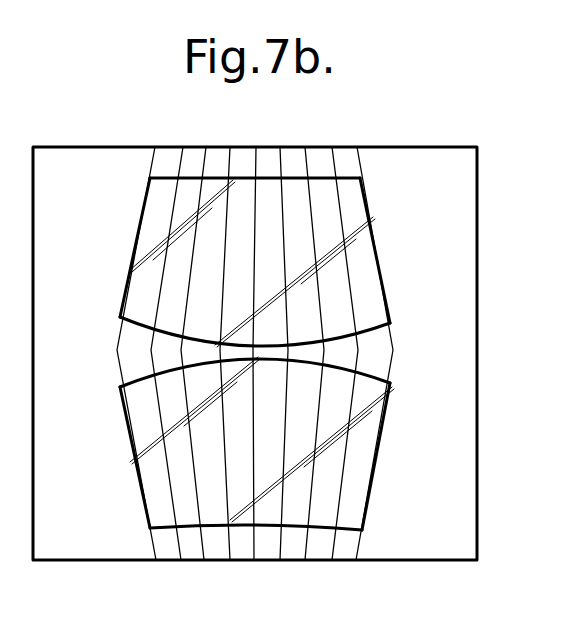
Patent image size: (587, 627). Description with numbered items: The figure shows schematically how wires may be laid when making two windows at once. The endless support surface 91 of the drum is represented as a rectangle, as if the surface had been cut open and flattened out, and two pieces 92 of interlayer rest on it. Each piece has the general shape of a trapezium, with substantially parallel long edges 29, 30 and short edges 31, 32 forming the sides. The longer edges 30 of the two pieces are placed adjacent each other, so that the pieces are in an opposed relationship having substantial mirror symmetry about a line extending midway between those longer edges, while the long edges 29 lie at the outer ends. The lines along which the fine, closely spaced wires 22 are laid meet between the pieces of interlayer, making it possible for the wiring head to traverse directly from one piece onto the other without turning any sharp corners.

The wires 22 is at (179, 163).
The long edge 29 is at (267, 177).
The long edge 30 is at (343, 340).
The short edge 31 is at (138, 230).
The short edge 32 is at (383, 244).
The endless support surface 91 is at (455, 187).
The pieces of interlayer 92 is at (373, 309).